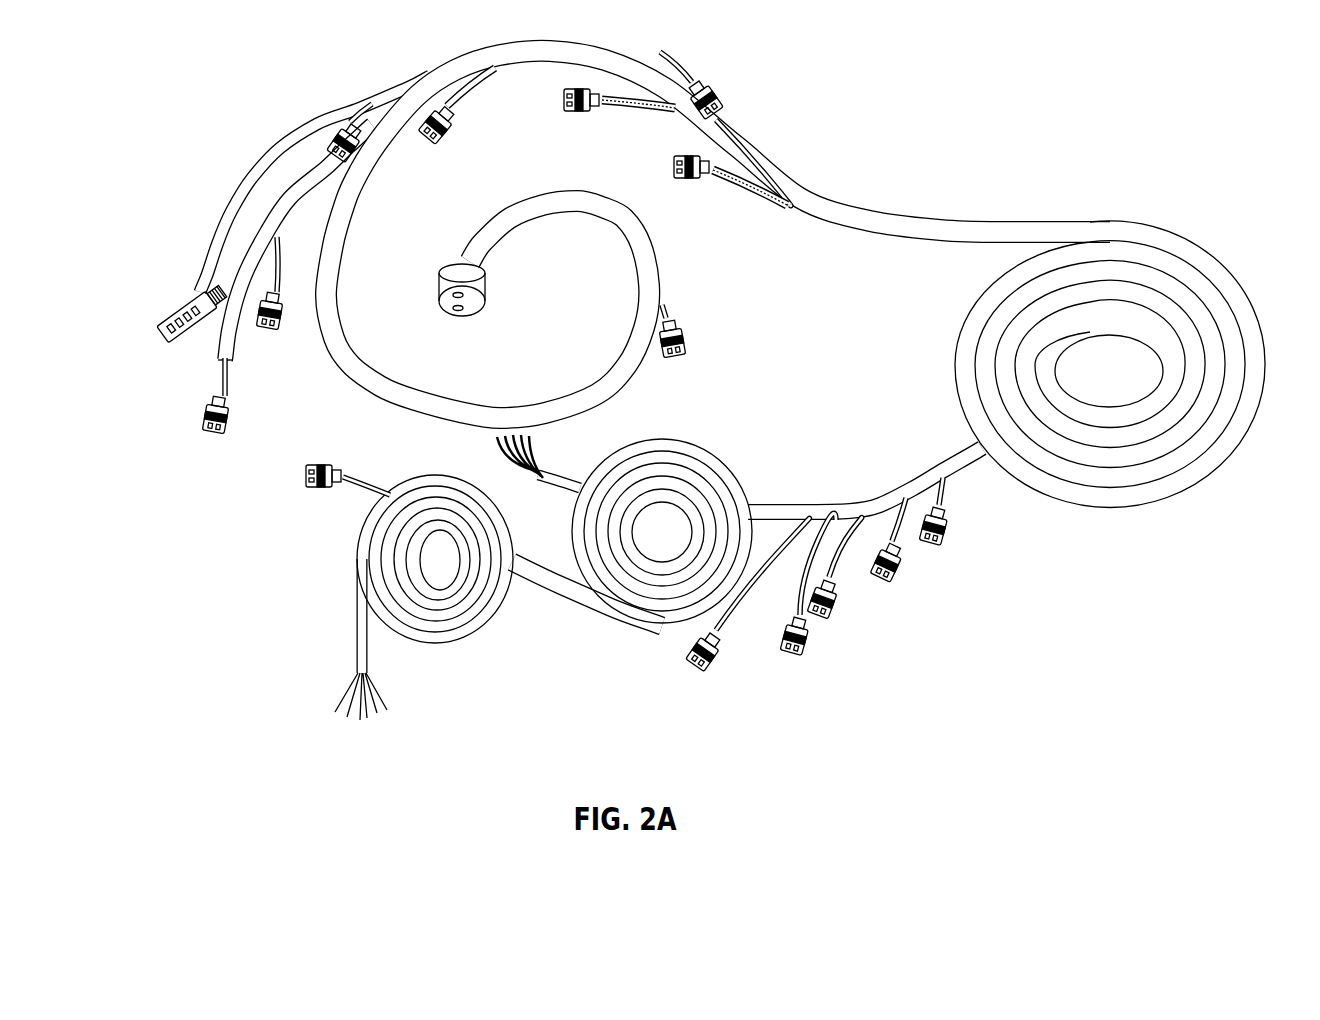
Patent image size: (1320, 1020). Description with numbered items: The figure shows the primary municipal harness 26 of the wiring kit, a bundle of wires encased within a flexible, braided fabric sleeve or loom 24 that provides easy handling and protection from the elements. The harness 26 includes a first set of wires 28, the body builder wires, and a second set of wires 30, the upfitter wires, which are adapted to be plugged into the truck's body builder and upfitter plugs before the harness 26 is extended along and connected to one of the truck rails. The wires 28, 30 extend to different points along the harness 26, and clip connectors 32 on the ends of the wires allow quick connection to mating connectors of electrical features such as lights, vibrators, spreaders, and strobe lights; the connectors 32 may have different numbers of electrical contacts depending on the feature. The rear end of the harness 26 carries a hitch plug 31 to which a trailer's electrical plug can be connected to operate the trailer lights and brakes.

The loom 24 is at (947, 228).
The primary harness 26 is at (337, 772).
The first set of wires 28 is at (352, 685).
The second set of wires 30 is at (493, 438).
The hitch plug 31 is at (483, 290).
The clip connectors 32 is at (160, 343).